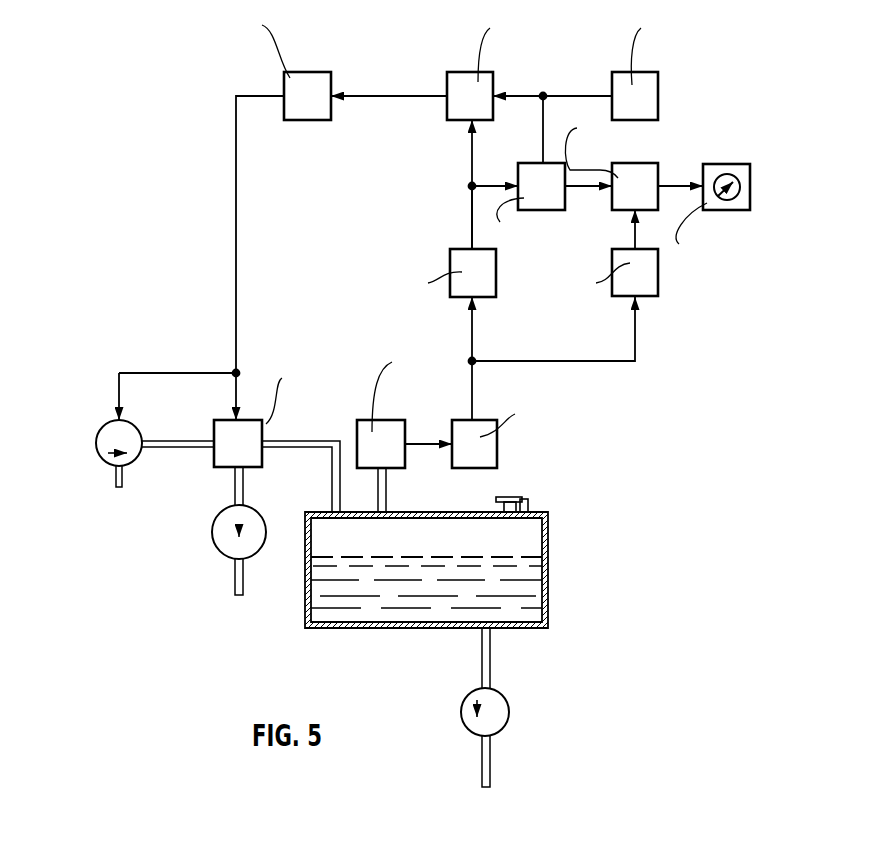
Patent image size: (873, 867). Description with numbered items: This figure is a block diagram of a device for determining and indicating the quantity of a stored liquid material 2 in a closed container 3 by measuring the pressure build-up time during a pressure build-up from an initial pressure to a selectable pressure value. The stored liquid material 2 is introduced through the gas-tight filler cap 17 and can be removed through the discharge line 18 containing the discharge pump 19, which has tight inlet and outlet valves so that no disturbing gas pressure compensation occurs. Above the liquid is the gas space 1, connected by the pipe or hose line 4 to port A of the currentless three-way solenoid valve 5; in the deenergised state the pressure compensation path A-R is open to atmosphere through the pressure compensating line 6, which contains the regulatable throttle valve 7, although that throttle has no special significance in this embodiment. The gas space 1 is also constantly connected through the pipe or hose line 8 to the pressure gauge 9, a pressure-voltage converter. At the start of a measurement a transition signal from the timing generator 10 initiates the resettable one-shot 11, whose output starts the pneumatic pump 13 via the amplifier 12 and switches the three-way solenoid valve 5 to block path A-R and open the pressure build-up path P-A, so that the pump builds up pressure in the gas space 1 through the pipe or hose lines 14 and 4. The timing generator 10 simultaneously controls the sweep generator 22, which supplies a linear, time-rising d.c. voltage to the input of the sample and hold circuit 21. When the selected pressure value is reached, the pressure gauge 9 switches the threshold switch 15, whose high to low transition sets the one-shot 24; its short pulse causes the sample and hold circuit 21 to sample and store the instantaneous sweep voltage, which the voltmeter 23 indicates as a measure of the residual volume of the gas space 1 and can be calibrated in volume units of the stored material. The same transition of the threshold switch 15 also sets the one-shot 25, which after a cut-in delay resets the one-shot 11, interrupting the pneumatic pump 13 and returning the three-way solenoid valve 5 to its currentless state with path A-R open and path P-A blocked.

The gas space 1 is at (357, 543).
The stored liquid material 2 is at (398, 587).
The closed container 3 is at (455, 628).
The pipe or hose line 4 is at (311, 451).
The three-way solenoid valve 5 is at (254, 427).
The pressure compensating line 6 is at (237, 579).
The regulatable throttle valve 7 is at (256, 550).
The pipe or hose line 8 is at (388, 496).
The pressure gauge 9 is at (380, 418).
The timing generator 10 is at (622, 73).
The resettable one-shot 11 is at (470, 70).
The amplifier 12 is at (312, 82).
The pneumatic pump 13 is at (136, 464).
The pipe or hose line 14 is at (188, 450).
The threshold switch 15 is at (498, 456).
The gas-tight filler cap 17 is at (526, 500).
The discharge line 18 is at (482, 755).
The discharge pump 19 is at (497, 735).
The sample and hold circuit 21 is at (654, 167).
The sweep generator 22 is at (527, 166).
The voltmeter 23 is at (721, 165).
The one-shot 24 is at (655, 296).
The one-shot 25 is at (452, 248).